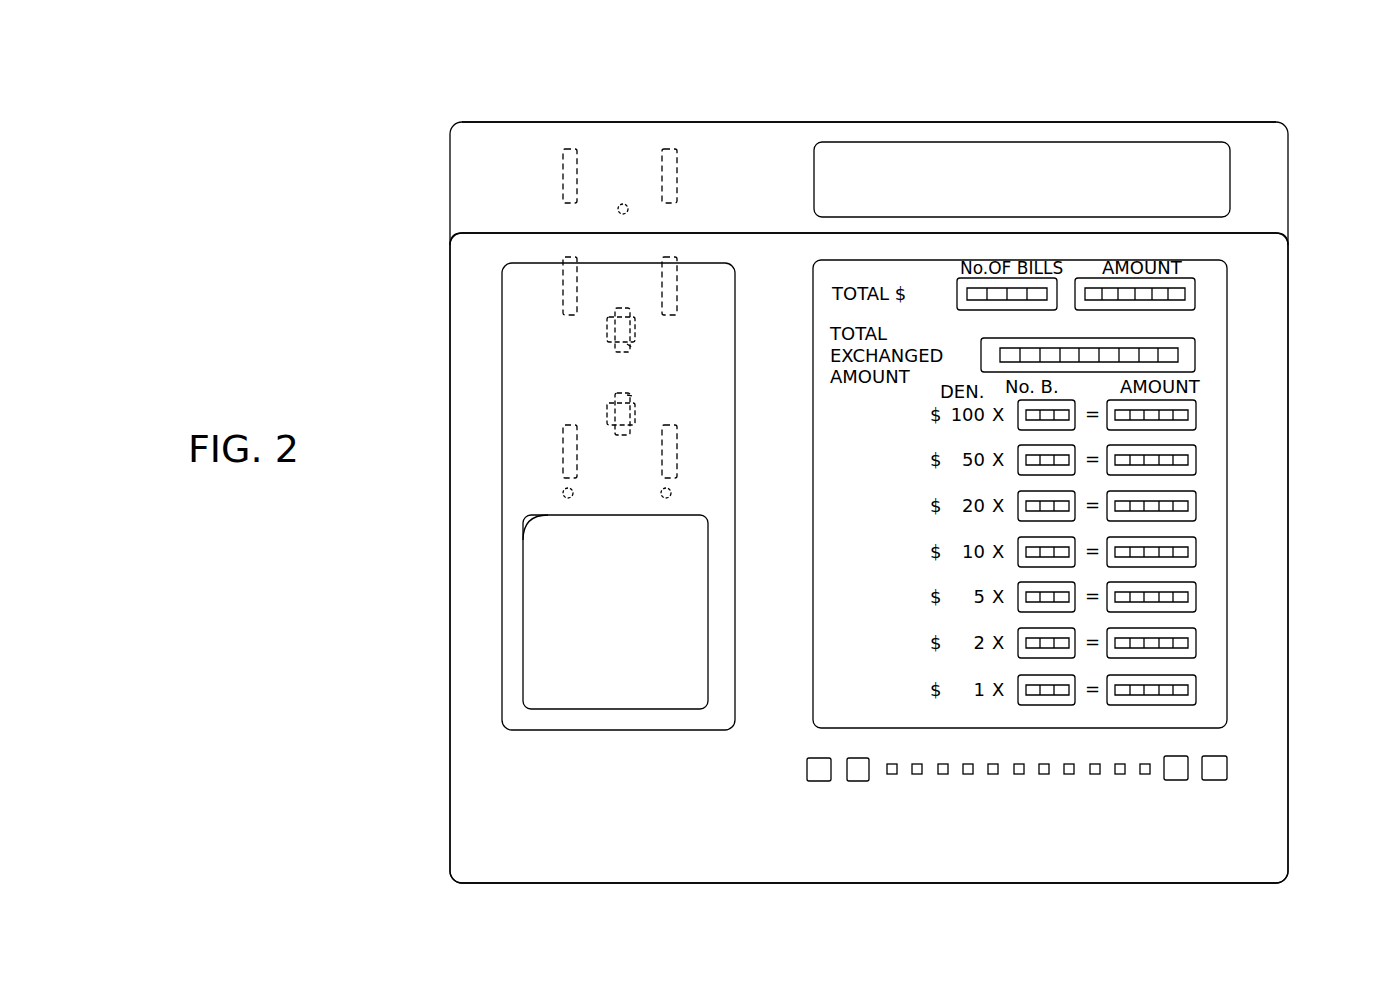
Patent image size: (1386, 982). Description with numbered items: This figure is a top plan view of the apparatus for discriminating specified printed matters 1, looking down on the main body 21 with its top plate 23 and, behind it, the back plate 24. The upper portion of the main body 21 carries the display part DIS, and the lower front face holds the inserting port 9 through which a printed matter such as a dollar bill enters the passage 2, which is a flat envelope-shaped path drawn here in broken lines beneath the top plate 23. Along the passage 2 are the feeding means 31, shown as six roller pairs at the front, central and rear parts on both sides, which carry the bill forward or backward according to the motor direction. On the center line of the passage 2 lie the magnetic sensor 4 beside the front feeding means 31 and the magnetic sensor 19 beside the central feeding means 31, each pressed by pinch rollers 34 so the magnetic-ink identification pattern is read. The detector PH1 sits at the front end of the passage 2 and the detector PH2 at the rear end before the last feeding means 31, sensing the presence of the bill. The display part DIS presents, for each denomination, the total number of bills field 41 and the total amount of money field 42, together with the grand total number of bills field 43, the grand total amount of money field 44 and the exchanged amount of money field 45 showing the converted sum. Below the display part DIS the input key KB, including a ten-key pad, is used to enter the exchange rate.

The apparatus for discriminating specified printed matters 1 is at (486, 98).
The main body 21 is at (631, 110).
The back plate 24 is at (775, 128).
The top plate 23 is at (1270, 583).
The display part DIS is at (1242, 192).
The passage 2 is at (614, 522).
The inserting port 9 is at (568, 516).
The feeding means 31 is at (563, 185).
The detector PH2 is at (628, 205).
The detector PH1 is at (574, 491).
The magnetic sensor 19 is at (607, 322).
The magnetic sensor 4 is at (608, 412).
The pinch rollers 34 is at (633, 348).
The grand total number of bills field 43 is at (1011, 246).
The grand total amount of money field 44 is at (1138, 246).
The exchanged amount of money field 45 is at (1203, 353).
The total number of bills field 41 is at (1010, 427).
The total amount of money field 42 is at (1204, 424).
The input key KB is at (1140, 800).